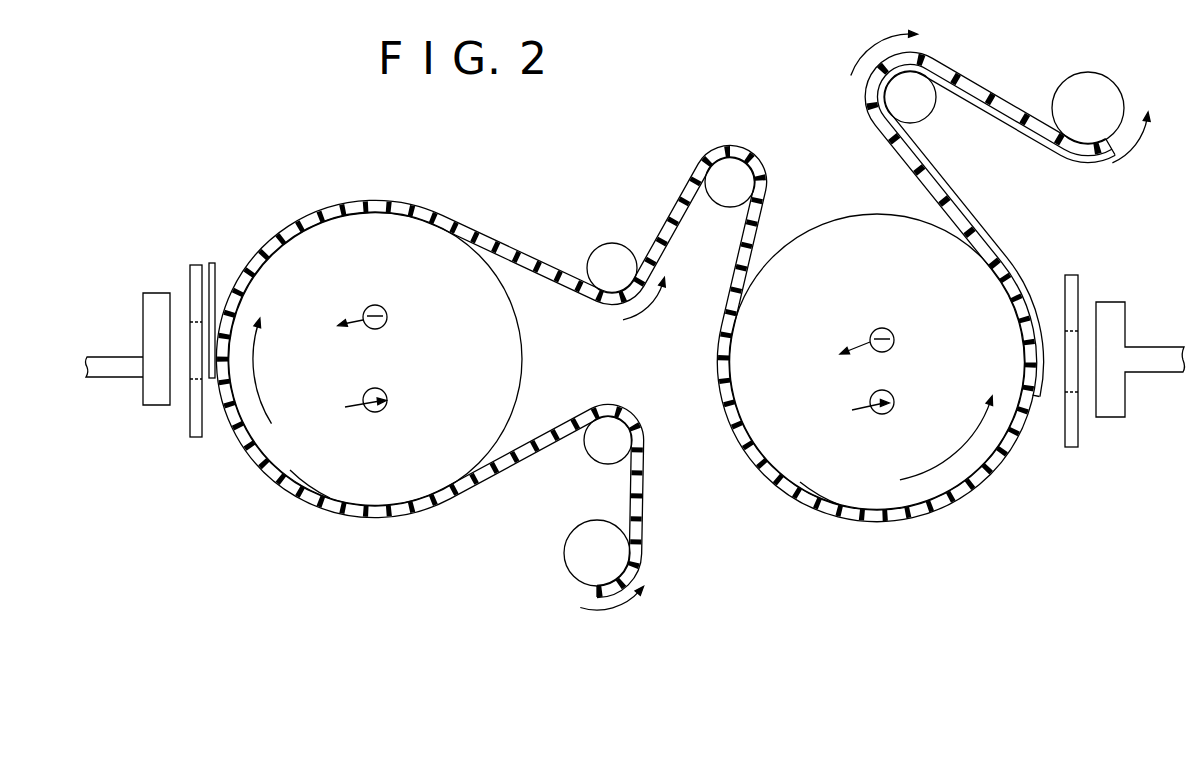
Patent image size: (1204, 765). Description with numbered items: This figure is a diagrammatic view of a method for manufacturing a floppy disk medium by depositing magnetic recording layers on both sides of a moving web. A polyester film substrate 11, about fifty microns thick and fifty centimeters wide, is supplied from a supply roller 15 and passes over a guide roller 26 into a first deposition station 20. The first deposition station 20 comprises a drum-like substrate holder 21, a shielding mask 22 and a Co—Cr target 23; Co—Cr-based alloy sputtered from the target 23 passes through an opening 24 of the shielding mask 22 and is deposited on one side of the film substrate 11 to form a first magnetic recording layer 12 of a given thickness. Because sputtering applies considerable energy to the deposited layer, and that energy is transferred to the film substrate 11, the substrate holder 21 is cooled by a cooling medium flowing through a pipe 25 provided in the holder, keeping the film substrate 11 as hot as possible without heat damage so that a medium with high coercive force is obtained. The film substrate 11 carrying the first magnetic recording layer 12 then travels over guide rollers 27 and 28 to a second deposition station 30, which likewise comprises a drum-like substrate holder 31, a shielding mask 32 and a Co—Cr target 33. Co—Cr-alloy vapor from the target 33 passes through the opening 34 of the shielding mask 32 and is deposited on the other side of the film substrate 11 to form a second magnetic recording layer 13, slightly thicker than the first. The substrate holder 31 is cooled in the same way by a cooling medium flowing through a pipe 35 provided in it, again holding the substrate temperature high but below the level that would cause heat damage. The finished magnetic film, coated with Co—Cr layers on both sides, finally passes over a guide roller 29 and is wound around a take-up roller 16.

The film substrate 11 is at (646, 513).
The first magnetic recording layer 12 is at (345, 204).
The second magnetic recording layer 13 is at (992, 242).
The supply roller 15 is at (574, 548).
The take-up roller 16 is at (1089, 82).
The first deposition station 20 is at (304, 337).
The substrate holder 21 is at (308, 478).
The shielding mask 22 is at (193, 422).
The Co—Cr target 23 is at (147, 310).
The opening 24 is at (209, 300).
The pipe 25 is at (384, 391).
The guide roller 26 is at (596, 449).
The guide roller 27 is at (601, 252).
The guide roller 28 is at (722, 196).
The guide roller 29 is at (926, 108).
The second deposition station 30 is at (957, 365).
The substrate holder 31 is at (820, 502).
The shielding mask 32 is at (1068, 300).
The Co—Cr target 33 is at (1121, 316).
The opening 34 is at (1077, 383).
The pipe 35 is at (891, 349).